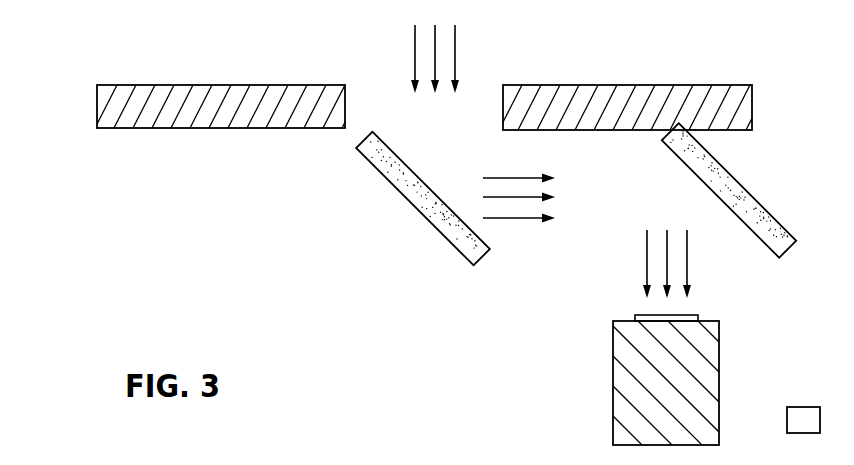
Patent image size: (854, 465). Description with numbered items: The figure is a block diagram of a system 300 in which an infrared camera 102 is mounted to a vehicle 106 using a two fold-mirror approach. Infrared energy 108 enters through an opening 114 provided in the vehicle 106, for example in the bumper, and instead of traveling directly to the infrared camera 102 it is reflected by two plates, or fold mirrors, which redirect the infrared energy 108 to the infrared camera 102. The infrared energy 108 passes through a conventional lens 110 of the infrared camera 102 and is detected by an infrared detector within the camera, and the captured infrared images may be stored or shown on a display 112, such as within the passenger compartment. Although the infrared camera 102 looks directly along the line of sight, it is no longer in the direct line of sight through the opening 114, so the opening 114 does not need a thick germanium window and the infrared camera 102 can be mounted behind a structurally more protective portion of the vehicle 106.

The system 300 is at (170, 202).
The infrared camera 102 is at (719, 377).
The vehicle 106 is at (75, 113).
The infrared energy 108 is at (414, 53).
The lens 110 is at (698, 318).
The display 112 is at (807, 407).
The opening 114 is at (477, 119).